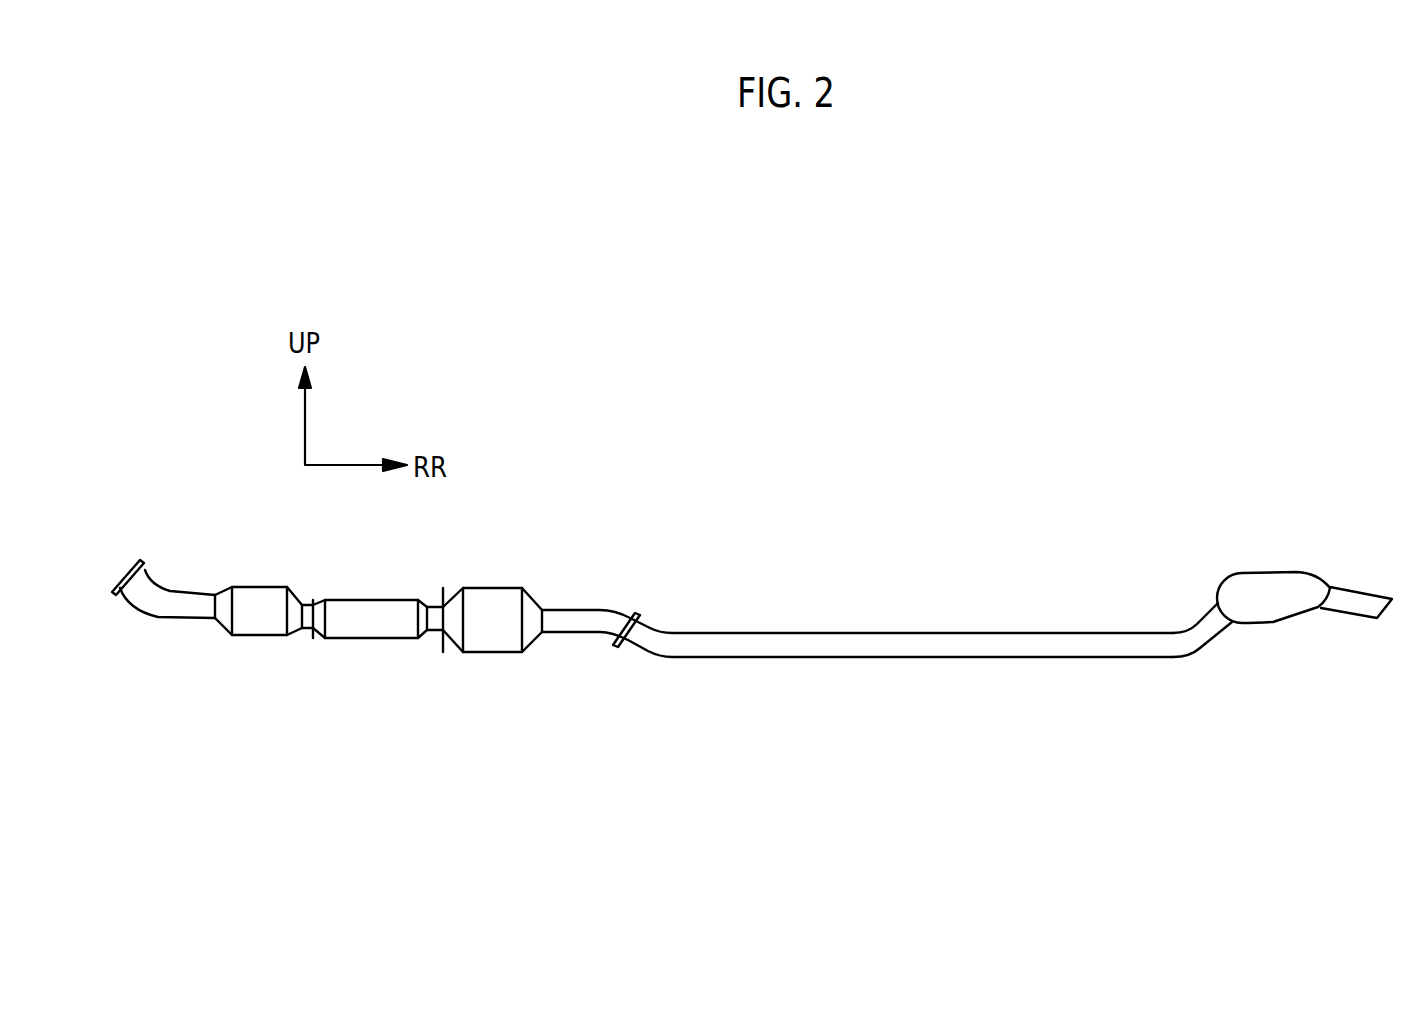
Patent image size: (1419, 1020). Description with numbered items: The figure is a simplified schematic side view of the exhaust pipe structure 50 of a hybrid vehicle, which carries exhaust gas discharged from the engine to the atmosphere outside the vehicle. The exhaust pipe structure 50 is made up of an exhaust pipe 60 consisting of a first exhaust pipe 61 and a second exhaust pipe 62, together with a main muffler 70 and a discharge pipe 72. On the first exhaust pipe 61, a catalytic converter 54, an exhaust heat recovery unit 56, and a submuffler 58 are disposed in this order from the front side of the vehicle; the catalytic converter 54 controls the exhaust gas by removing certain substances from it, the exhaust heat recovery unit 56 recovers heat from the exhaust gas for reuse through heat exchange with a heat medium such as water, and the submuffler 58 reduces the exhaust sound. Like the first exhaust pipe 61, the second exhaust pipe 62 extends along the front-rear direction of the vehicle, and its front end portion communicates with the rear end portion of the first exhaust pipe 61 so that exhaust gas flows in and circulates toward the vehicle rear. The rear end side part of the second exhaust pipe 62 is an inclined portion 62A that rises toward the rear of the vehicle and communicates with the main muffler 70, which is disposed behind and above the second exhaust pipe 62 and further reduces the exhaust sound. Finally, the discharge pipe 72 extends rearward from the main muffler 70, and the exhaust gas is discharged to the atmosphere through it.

The exhaust pipe structure 50 is at (1235, 433).
The catalytic converter 54 is at (255, 625).
The exhaust heat recovery unit 56 is at (372, 630).
The submuffler 58 is at (492, 637).
The exhaust pipe 60 is at (705, 752).
The first exhaust pipe 61 is at (638, 642).
The second exhaust pipe 62 is at (680, 652).
The inclined portion 62A is at (1195, 630).
The main muffler 70 is at (1290, 573).
The discharge pipe 72 is at (1358, 600).